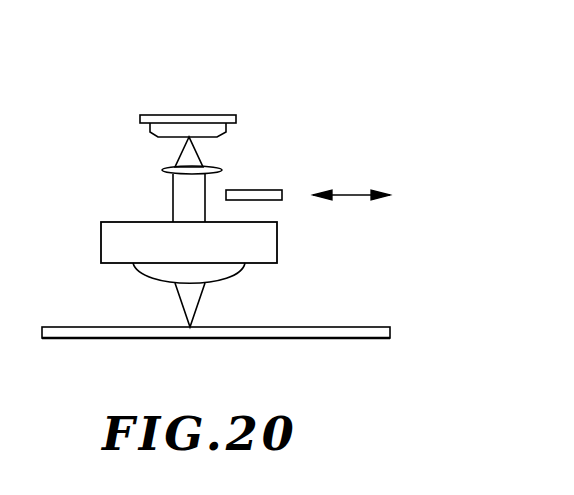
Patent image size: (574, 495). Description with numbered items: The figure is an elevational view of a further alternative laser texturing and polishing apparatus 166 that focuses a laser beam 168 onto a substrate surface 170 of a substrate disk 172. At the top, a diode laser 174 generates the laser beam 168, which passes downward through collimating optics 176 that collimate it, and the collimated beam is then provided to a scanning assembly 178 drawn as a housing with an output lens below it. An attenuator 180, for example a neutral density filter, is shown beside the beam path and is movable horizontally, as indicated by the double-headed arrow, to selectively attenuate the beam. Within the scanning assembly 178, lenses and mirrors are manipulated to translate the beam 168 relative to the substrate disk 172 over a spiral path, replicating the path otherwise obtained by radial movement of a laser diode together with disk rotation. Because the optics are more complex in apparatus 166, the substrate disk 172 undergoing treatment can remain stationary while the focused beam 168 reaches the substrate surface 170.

The laser texturing and polishing apparatus 166 is at (297, 137).
The laser beam 168 is at (197, 298).
The substrate surface 170 is at (345, 327).
The substrate disk 172 is at (347, 338).
The diode laser 174 is at (180, 127).
The collimating optics 176 is at (170, 170).
The scanning assembly 178 is at (118, 244).
The attenuator 180 is at (260, 188).